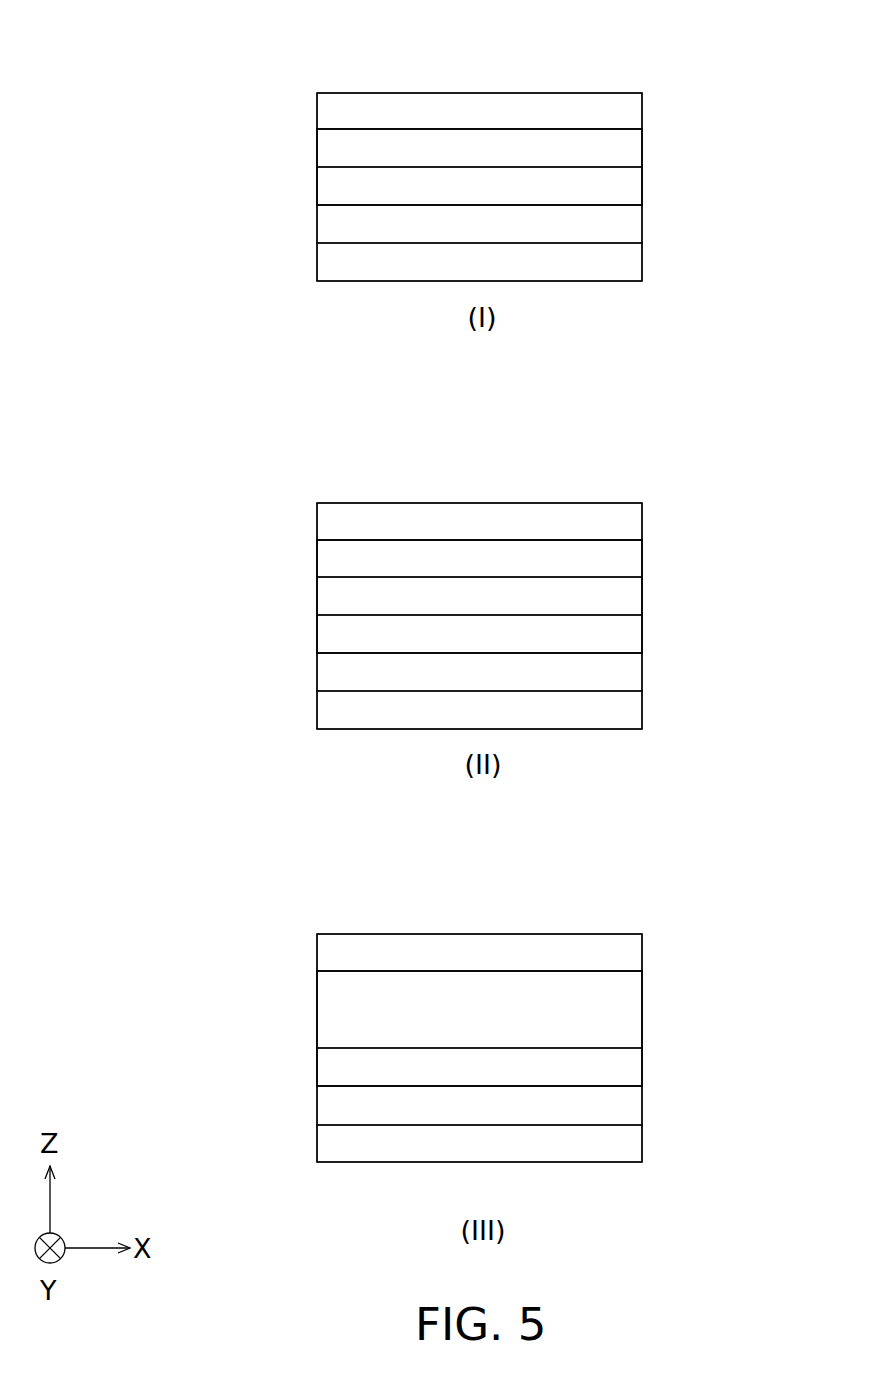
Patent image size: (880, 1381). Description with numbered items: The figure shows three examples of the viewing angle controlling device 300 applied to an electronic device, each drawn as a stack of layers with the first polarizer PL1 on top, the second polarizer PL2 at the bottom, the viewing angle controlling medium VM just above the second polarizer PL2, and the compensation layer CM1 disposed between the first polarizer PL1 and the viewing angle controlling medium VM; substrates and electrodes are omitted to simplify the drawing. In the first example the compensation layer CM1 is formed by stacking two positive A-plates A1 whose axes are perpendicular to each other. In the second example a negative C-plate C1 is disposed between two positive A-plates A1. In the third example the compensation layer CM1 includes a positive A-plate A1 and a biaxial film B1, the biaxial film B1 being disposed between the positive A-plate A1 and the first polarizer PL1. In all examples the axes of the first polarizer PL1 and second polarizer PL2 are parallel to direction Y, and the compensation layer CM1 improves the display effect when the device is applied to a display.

The viewing angle controlling device 300 is at (276, 68).
The first polarizer PL1 is at (627, 113).
The positive A-plate A1 is at (327, 150).
The negative C-plate C1 is at (327, 598).
The biaxial film B1 is at (327, 1012).
The compensation layer CM1 is at (652, 129).
The viewing angle controlling medium VM is at (627, 223).
The second polarizer PL2 is at (627, 258).